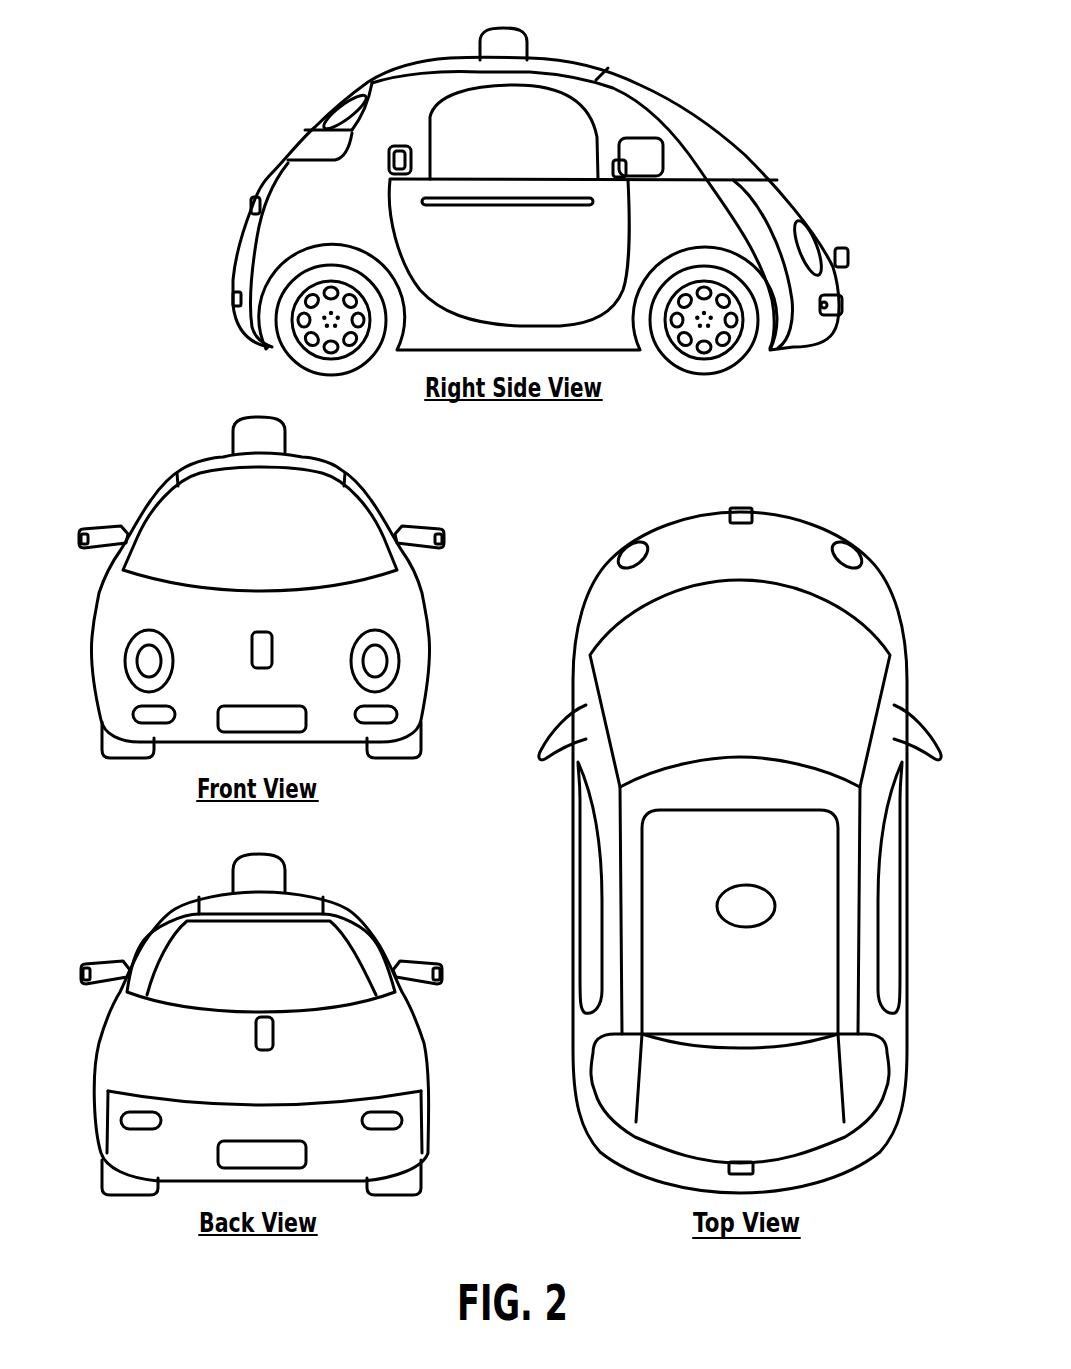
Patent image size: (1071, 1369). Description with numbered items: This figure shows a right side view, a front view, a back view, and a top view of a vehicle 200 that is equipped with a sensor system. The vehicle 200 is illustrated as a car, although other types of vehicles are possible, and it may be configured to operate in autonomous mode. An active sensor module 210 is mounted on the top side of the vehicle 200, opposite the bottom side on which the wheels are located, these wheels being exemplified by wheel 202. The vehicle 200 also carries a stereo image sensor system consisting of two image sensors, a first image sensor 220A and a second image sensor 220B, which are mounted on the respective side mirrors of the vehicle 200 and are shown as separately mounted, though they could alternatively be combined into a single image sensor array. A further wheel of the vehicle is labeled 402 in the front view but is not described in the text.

The vehicle 200 is at (446, 617).
The wheel 202 is at (706, 376).
The active sensor module 210 is at (515, 22).
The first image sensor 220A is at (438, 551).
The second image sensor 220B is at (80, 529).
The front wheel 402 is at (139, 754).